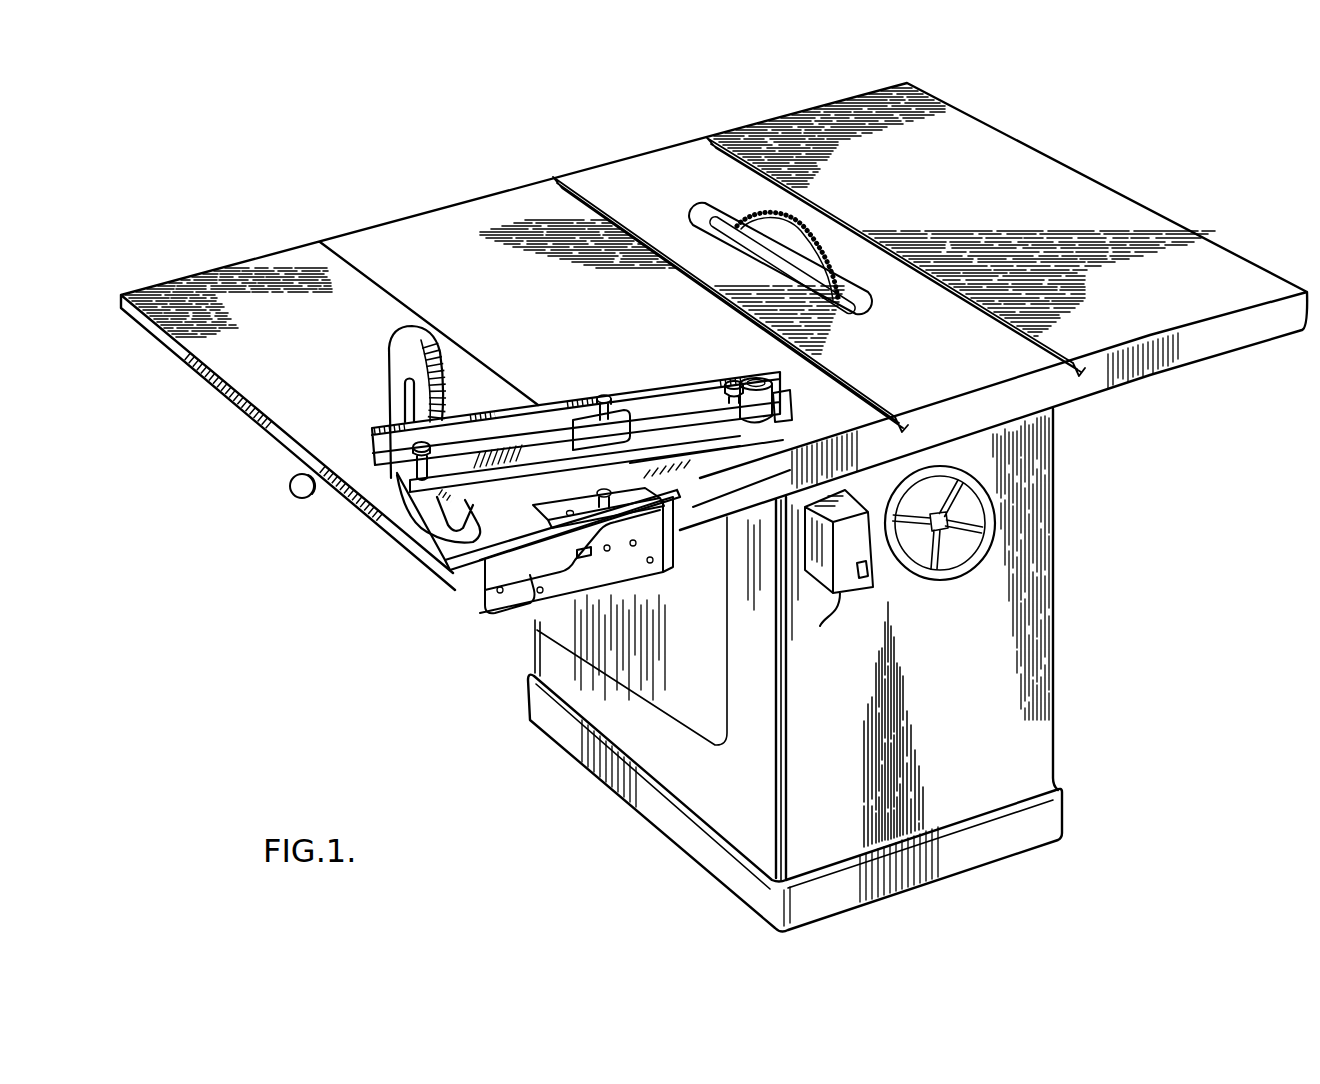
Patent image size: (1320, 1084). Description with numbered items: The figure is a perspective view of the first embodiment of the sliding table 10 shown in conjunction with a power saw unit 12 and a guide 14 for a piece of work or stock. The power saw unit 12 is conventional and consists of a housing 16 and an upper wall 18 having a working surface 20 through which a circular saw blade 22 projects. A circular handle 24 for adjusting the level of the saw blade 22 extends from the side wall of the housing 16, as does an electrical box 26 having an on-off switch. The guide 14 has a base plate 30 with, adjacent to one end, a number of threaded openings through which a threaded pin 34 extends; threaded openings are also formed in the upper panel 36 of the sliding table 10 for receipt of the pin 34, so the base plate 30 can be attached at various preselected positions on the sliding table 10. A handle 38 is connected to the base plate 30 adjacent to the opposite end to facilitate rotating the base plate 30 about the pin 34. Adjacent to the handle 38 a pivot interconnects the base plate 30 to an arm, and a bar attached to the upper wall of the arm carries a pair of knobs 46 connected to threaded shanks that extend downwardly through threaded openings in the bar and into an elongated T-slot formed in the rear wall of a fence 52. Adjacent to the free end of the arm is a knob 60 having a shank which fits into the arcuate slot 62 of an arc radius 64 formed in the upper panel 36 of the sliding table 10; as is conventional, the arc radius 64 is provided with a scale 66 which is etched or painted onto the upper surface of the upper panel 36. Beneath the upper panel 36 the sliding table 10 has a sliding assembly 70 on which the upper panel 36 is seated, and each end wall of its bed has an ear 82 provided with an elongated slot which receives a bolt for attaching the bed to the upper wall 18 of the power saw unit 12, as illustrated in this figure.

The sliding table 10 is at (189, 252).
The power saw unit 12 is at (578, 158).
The guide 14 is at (553, 401).
The housing 16 is at (1057, 685).
The upper wall 18 is at (1200, 352).
The working surface 20 is at (1048, 175).
The circular saw blade 22 is at (797, 226).
The circular handle 24 is at (950, 572).
The electrical box 26 is at (848, 592).
The base plate 30 is at (724, 464).
The threaded pin 34 is at (576, 492).
The upper panel 36 is at (252, 336).
The handle 38 is at (785, 412).
The knobs 46 is at (736, 378).
The fence 52 is at (498, 408).
The knob 60 is at (409, 479).
The arcuate slot 62 is at (422, 542).
The arc radius 64 is at (403, 398).
The scale 66 is at (434, 350).
The sliding assembly 70 is at (584, 568).
The ear 82 is at (680, 548).